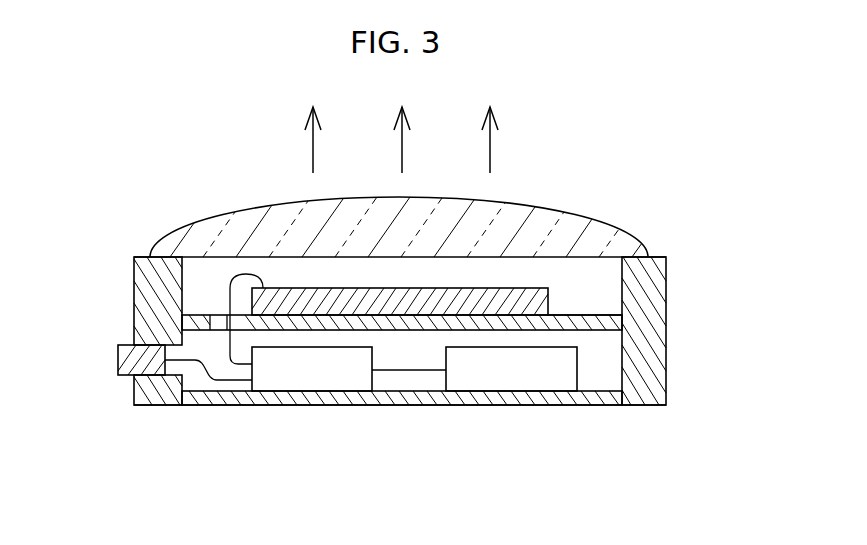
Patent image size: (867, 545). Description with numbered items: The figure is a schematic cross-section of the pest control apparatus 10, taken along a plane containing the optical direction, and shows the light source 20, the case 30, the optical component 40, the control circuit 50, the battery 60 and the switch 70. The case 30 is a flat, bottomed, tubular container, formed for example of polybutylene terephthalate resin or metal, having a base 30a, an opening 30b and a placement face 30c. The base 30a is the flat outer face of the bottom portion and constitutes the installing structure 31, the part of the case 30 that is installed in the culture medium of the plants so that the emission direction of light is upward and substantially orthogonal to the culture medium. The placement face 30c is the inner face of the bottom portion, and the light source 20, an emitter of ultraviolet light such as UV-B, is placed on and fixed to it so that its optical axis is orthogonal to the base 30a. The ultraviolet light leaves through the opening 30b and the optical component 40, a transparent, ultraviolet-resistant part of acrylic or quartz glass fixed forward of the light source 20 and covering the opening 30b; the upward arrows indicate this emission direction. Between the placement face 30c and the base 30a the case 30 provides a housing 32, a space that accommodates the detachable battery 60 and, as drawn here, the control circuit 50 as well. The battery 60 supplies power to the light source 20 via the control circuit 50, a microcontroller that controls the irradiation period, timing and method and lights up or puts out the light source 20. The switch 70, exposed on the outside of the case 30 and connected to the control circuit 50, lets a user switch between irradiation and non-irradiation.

The pest control apparatus 10 is at (697, 182).
The light source 20 is at (512, 288).
The case 30 is at (652, 297).
The base 30a is at (262, 406).
The opening 30b is at (292, 257).
The placement face 30c is at (574, 313).
The installing structure 31 is at (308, 405).
The housing 32 is at (605, 357).
The optical component 40 is at (228, 220).
The control circuit 50 is at (373, 382).
The battery 60 is at (577, 382).
The switch 70 is at (118, 355).